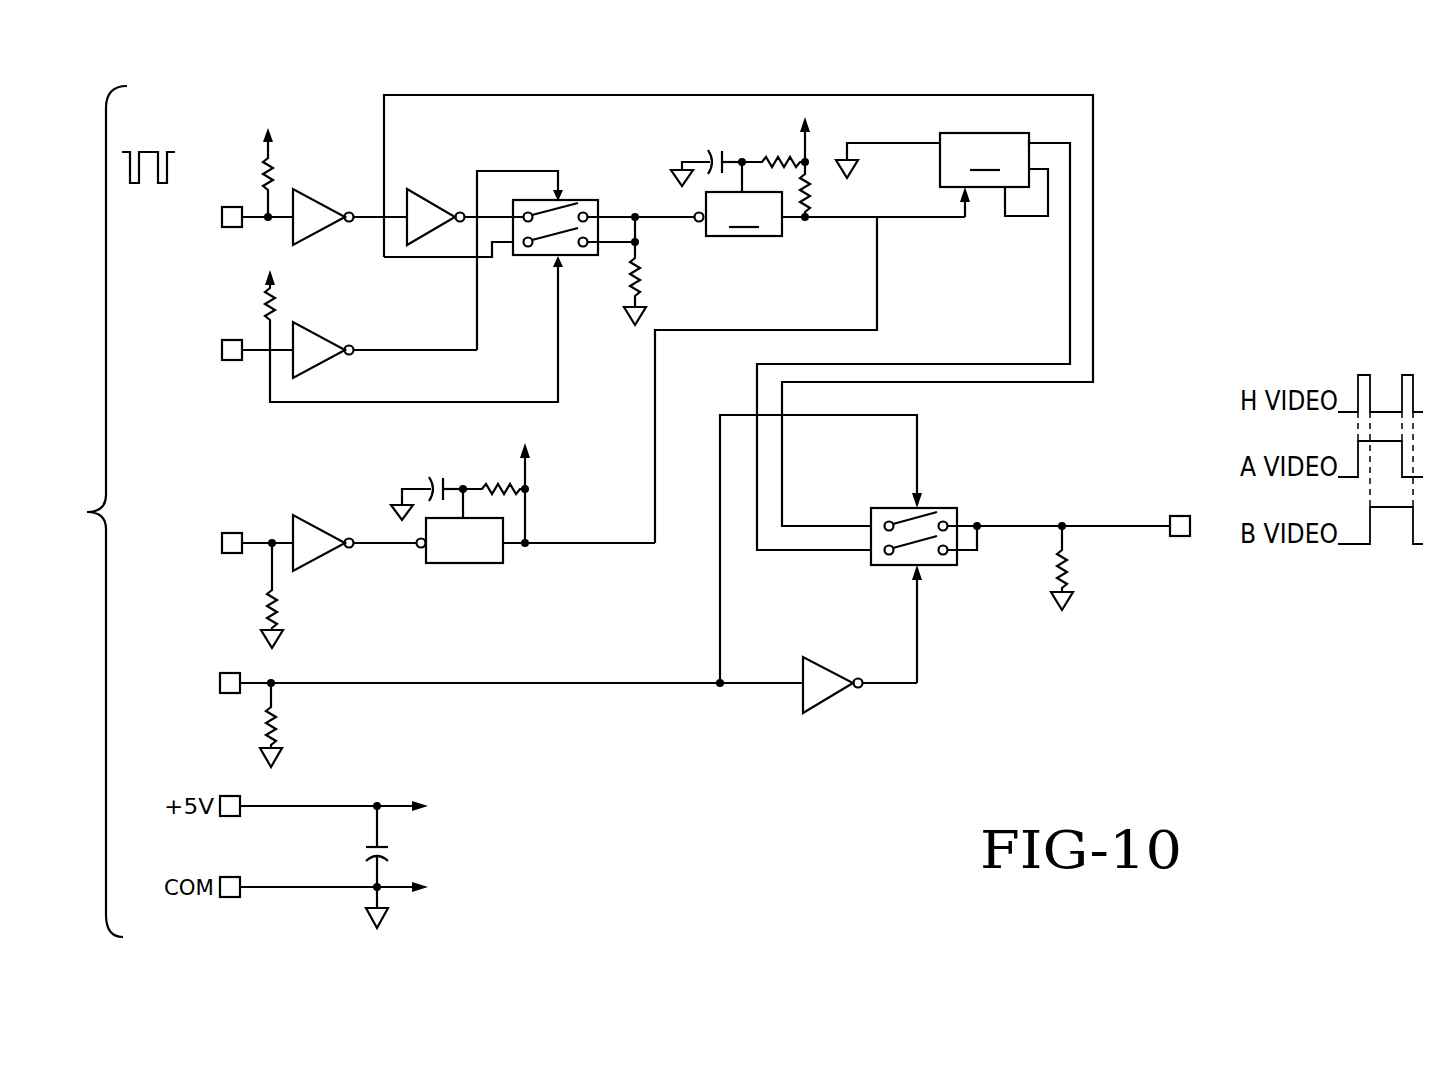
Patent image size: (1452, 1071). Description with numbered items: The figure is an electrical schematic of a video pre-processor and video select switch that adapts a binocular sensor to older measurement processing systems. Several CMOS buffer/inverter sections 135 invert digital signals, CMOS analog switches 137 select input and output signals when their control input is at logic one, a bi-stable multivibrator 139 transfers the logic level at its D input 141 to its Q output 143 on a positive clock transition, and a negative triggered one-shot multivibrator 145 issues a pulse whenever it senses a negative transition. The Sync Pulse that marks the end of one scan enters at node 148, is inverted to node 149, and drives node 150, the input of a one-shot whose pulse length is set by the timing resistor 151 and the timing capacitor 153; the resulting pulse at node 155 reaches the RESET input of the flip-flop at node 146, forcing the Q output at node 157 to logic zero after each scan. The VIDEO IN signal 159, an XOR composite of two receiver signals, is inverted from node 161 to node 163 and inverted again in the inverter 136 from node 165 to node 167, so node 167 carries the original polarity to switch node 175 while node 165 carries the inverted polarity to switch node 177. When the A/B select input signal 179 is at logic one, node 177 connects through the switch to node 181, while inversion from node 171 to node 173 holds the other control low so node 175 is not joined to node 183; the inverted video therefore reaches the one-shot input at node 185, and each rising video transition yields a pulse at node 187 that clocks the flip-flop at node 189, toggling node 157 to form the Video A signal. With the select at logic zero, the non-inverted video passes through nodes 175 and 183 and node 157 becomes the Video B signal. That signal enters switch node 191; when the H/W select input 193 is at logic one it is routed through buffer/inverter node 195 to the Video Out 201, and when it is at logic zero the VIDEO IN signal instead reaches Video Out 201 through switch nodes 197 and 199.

The CMOS buffer/inverter 135 is at (320, 366).
The 4049 inverter 136 is at (430, 200).
The CMOS analog switch 137 is at (565, 200).
The bi-stable multivibrator 139 is at (984, 160).
The D input 141 is at (1003, 195).
The Q output 143 is at (1030, 165).
The negative triggered one-shot multivibrator 145 is at (744, 214).
The RESET input node 146 is at (940, 170).
The Sync Pulse input node 148 is at (640, 218).
The inverted Sync Pulse node 149 is at (351, 548).
The NE558 input node 150 is at (423, 550).
The 4.7 k resistor 151 is at (772, 162).
The 0.1 uF capacitor 153 is at (712, 160).
The NE558 output node 155 is at (528, 548).
The Q output node 157 is at (1032, 143).
The VIDEO IN signal 159 is at (230, 207).
The inverter input node 161 is at (266, 220).
The inverter output node 163 is at (348, 222).
The second inverter input node 165 is at (365, 216).
The second inverter output node 167 is at (460, 222).
The A/B inverter input node 171 is at (288, 358).
The A/B inverter output node 173 is at (353, 350).
The CMOS switch input node 175 is at (524, 214).
The CMOS switch input node 177 is at (525, 246).
The A/B select input signal 179 is at (230, 340).
The CMOS switch output node 181 is at (584, 247).
The CMOS switch output node 183 is at (586, 213).
The NE558 input node 185 is at (700, 222).
The NE558 output node 187 is at (806, 222).
The clock input node 189 is at (967, 192).
The CMOS switch input node 191 is at (885, 521).
The H/W select input 193 is at (222, 673).
The 4049 buffer/inverter node 195 is at (862, 688).
The CMOS switch node 197 is at (888, 556).
The CMOS switch node 199 is at (945, 556).
The Video Out 201 is at (1170, 517).